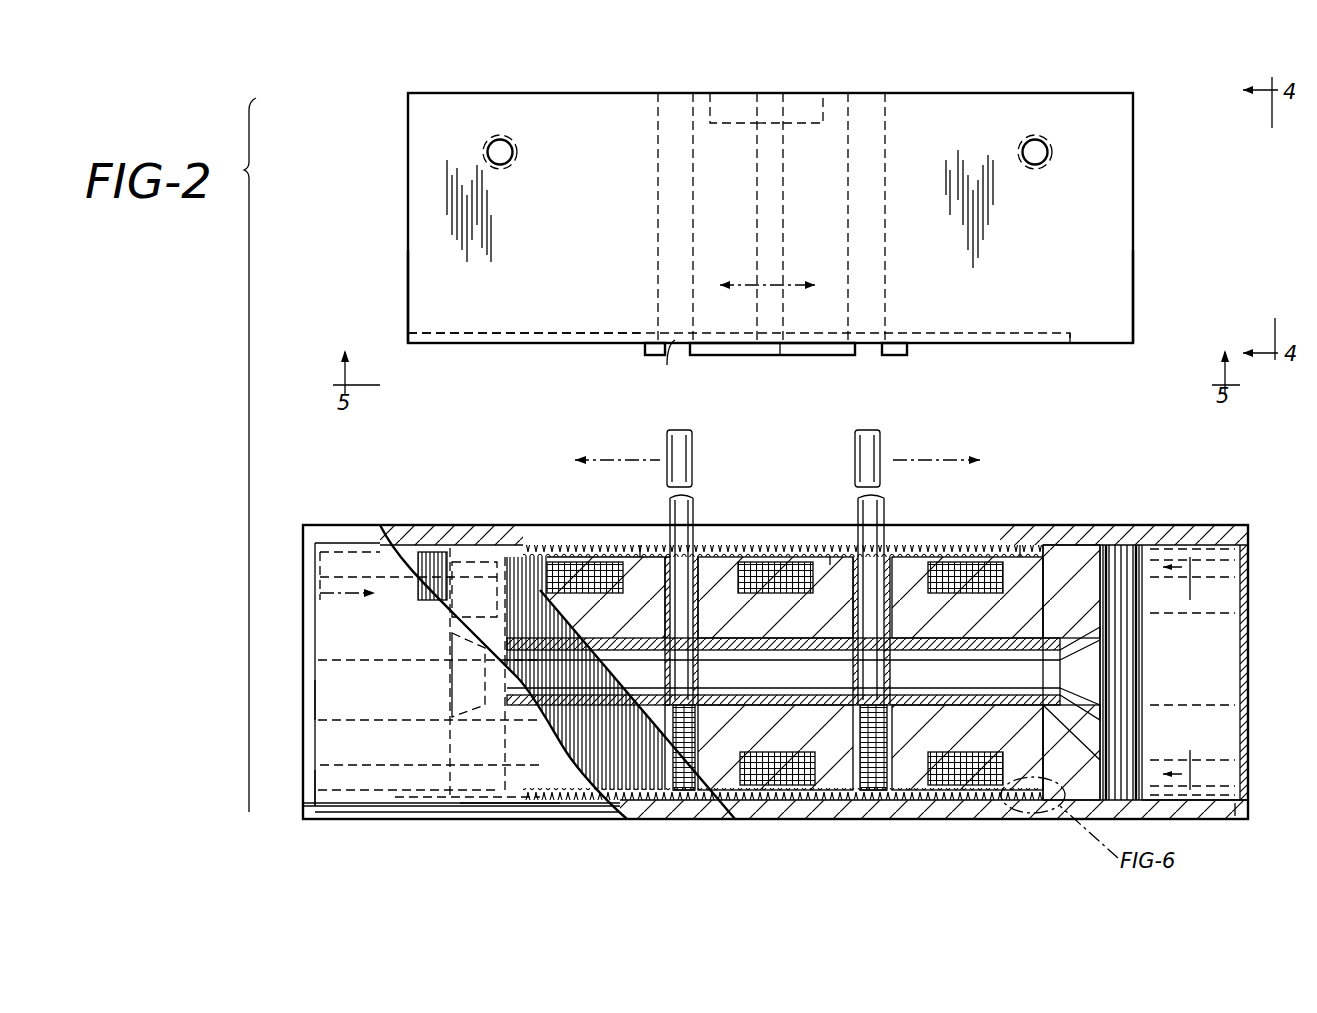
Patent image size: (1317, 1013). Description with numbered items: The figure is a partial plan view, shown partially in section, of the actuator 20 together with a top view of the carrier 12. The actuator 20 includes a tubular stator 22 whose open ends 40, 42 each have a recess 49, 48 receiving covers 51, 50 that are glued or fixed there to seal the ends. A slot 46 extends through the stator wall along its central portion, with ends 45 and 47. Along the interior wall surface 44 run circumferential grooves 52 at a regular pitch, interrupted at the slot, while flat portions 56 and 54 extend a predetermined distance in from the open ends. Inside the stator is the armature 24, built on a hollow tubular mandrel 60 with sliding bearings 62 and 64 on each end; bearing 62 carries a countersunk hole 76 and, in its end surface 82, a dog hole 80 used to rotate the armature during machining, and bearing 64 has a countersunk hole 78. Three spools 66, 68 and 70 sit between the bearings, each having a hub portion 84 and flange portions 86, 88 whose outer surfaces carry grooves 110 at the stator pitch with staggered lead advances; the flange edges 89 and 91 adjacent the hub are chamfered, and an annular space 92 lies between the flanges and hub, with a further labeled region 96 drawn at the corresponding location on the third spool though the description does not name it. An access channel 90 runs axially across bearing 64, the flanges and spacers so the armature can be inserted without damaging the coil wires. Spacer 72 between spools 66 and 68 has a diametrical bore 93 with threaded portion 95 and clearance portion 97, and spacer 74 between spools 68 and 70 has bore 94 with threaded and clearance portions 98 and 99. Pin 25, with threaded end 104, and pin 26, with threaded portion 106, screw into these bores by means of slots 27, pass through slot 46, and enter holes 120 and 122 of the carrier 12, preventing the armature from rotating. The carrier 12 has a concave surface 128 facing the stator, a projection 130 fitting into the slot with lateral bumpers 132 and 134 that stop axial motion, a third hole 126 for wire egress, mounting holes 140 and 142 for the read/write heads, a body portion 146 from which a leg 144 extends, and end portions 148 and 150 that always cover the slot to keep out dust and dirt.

The carrier 12 is at (405, 228).
The mounting hole 142 is at (497, 144).
The mounting hole 140 is at (1049, 144).
The leg 144 is at (805, 125).
The body portion 146 is at (588, 227).
The end portion 148 is at (407, 297).
The end portion 150 is at (1135, 296).
The lateral bumper 132 is at (645, 350).
The hole 120 is at (678, 350).
The third hole 126 is at (772, 356).
The projection 130 is at (803, 356).
The hole 122 is at (870, 345).
The lateral bumper 134 is at (910, 348).
The concave surface 128 is at (1071, 343).
The actuator 20 is at (760, 628).
The tubular stator 22 is at (344, 562).
The open end 40 is at (318, 594).
The cover 51 is at (318, 710).
The recess 49 is at (318, 788).
The flat portion 56 is at (360, 796).
The axial bore 80 is at (456, 560).
The countersunk hole 76 is at (462, 697).
The slot end 45 is at (536, 545).
The surface 82 is at (447, 773).
The sliding bearing 62 is at (482, 783).
The slot 46 is at (600, 545).
The spool 70 is at (1060, 544).
The annular space 92 is at (573, 560).
The hub portion 84 is at (625, 627).
The bore 94 is at (791, 568).
The grid pad 96 is at (985, 565).
The groove 110 is at (525, 800).
The bore 93 is at (699, 680).
The tubular mandrel 60 is at (1042, 694).
The countersunk hole 78 is at (1085, 640).
The slot 27 is at (692, 432).
The pin 25 is at (668, 445).
The pin 26 is at (882, 445).
The spacer 72 is at (692, 600).
The clearance portion 97 is at (698, 600).
The second spacer 74 is at (880, 600).
The clearance portion 99 is at (880, 602).
The spool 66 is at (643, 578).
The spool 68 is at (831, 580).
The slot end 47 is at (1028, 580).
The threaded end 104 is at (700, 730).
The threaded portion 106 is at (890, 730).
The sliding bearing 64 is at (1075, 570).
The access channel 90 is at (1093, 550).
The edge 89 is at (995, 788).
The flange portion 88 is at (1027, 757).
The groove 52 is at (1130, 705).
The interior wall surface 44 is at (1143, 717).
The cover 50 is at (1193, 606).
The open end 42 is at (1250, 540).
The recess 48 is at (1250, 784).
The armature 24 is at (1082, 767).
The flat portion 54 is at (1223, 787).
The edge 91 is at (962, 820).
The flange portion 86 is at (523, 777).
The threaded portion 95 is at (687, 800).
The threaded portion 98 is at (878, 777).